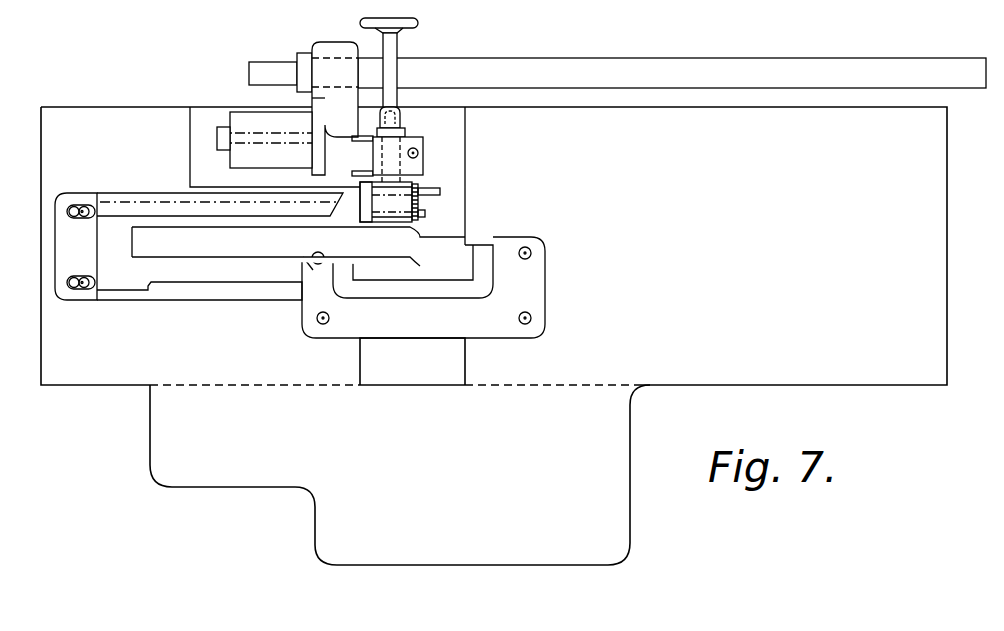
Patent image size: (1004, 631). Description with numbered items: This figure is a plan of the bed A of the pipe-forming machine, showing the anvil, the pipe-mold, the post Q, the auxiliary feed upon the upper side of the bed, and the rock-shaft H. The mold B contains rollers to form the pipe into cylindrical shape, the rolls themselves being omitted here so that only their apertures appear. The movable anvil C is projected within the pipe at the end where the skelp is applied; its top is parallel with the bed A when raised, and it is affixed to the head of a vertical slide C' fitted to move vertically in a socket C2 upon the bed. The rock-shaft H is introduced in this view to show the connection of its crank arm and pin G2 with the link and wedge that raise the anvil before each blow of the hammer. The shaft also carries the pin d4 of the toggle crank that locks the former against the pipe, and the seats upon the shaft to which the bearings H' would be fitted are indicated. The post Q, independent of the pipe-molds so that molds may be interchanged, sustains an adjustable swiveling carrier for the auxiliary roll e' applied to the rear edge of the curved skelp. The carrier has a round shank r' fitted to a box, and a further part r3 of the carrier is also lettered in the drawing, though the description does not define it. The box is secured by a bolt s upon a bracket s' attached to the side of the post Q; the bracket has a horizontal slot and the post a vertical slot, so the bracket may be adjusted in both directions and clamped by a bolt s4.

The bed A is at (494, 336).
The mold B is at (105, 245).
The movable anvil C is at (298, 246).
The vertical slide C' is at (413, 271).
The socket C2 is at (480, 282).
The crank arm and pin G2 is at (412, 361).
The rock-shaft H is at (672, 62).
The bearings for the rock-shaft H' is at (335, 97).
The pin d4 is at (268, 66).
The post Q is at (264, 140).
The bolt s4 is at (217, 133).
The bracket s' is at (331, 143).
The bolt s is at (426, 162).
The round shank r' is at (404, 121).
The block r3 is at (423, 150).
The auxiliary roll e' is at (388, 202).